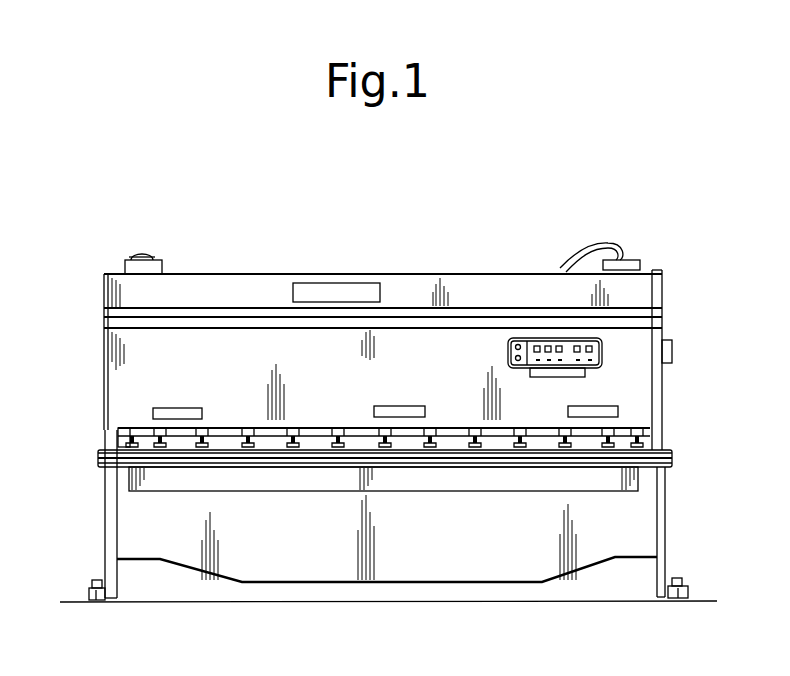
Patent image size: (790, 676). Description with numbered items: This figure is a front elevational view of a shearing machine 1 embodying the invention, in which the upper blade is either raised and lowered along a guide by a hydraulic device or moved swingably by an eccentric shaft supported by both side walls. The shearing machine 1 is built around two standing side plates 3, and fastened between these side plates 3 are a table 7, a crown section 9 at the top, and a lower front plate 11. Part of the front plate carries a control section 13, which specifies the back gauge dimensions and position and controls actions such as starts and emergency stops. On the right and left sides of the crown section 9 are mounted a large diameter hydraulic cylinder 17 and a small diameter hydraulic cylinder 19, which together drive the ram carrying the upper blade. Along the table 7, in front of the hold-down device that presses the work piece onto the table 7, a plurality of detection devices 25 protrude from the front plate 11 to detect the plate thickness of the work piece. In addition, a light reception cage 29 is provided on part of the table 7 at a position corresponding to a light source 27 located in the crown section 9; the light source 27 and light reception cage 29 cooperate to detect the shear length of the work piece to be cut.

The shearing machine 1 is at (268, 243).
The side plates 3 is at (108, 508).
The table 7 is at (390, 462).
The crown section 9 is at (460, 283).
The lower front plate 11 is at (240, 345).
The control section 13 is at (571, 347).
The large diameter hydraulic cylinder 17 is at (148, 260).
The small diameter hydraulic cylinder 19 is at (630, 262).
The detection devices 25 is at (178, 411).
The light source 27 is at (340, 294).
The light reception cage 29 is at (302, 482).